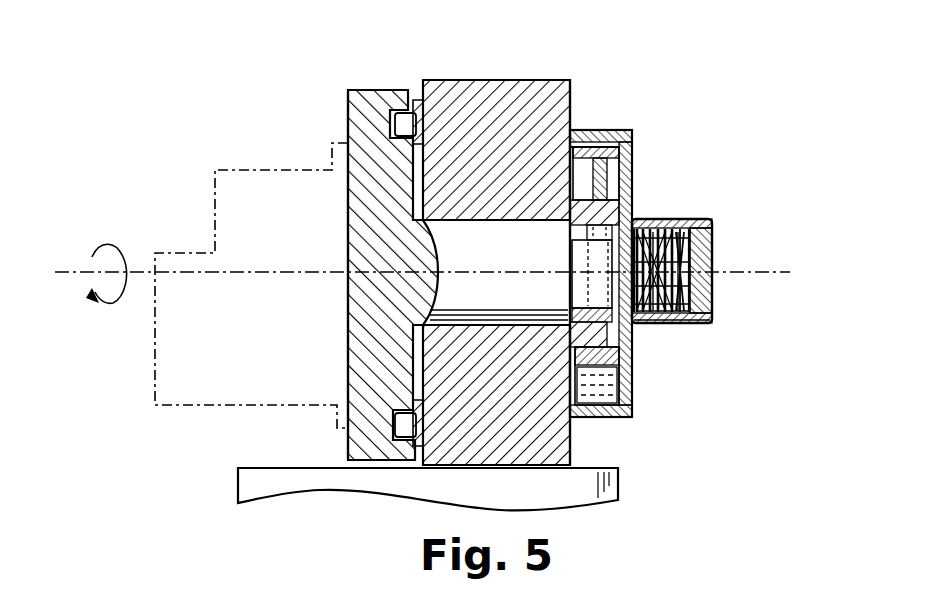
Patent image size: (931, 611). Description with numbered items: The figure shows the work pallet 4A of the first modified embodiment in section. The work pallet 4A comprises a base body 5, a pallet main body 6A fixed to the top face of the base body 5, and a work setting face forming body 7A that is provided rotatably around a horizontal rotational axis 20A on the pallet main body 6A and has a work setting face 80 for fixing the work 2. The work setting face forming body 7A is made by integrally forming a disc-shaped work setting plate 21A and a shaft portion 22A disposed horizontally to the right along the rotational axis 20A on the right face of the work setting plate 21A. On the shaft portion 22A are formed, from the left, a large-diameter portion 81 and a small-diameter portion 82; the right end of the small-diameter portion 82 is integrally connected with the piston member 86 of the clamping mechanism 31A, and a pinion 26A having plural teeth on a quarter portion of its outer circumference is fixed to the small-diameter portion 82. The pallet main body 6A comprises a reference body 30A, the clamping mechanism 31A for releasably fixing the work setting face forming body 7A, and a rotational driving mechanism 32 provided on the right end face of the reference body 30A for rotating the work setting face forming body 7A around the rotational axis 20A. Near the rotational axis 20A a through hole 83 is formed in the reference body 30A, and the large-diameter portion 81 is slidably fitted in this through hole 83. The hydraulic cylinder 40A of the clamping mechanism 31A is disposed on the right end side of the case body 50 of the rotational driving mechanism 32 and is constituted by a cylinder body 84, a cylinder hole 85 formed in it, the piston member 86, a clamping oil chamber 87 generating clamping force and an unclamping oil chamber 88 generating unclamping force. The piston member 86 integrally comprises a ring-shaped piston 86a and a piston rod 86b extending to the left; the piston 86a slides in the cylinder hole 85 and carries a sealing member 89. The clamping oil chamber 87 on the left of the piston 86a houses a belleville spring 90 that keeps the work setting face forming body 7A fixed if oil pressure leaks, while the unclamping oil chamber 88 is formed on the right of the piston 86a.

The work 2 is at (188, 406).
The work pallet 4A is at (693, 84).
The base body 5 is at (618, 490).
The pallet main body 6A is at (541, 79).
The work setting face forming body 7A is at (352, 90).
The rotational axis 20A is at (72, 278).
The work setting plate 21A is at (388, 88).
The shaft portion 22A is at (497, 291).
The pinion 26A is at (636, 208).
The reference body 30A is at (475, 80).
The clamping mechanism 31A is at (714, 273).
The rotational driving mechanism 32 is at (626, 420).
The hydraulic cylinder 40A is at (714, 308).
The case body 50 is at (574, 130).
The work setting face 80 is at (348, 222).
The large-diameter portion 81 is at (483, 310).
The small-diameter portion 82 is at (567, 290).
The through hole 83 is at (511, 220).
The cylinder body 84 is at (712, 256).
The cylinder hole 85 is at (682, 218).
The piston member 86 is at (745, 400).
The piston 86a is at (682, 323).
The piston rod 86b is at (648, 323).
The clamping oil chamber 87 is at (655, 218).
The unclamping oil chamber 88 is at (712, 233).
The sealing member 89 is at (702, 323).
The belleville spring 90 is at (702, 218).